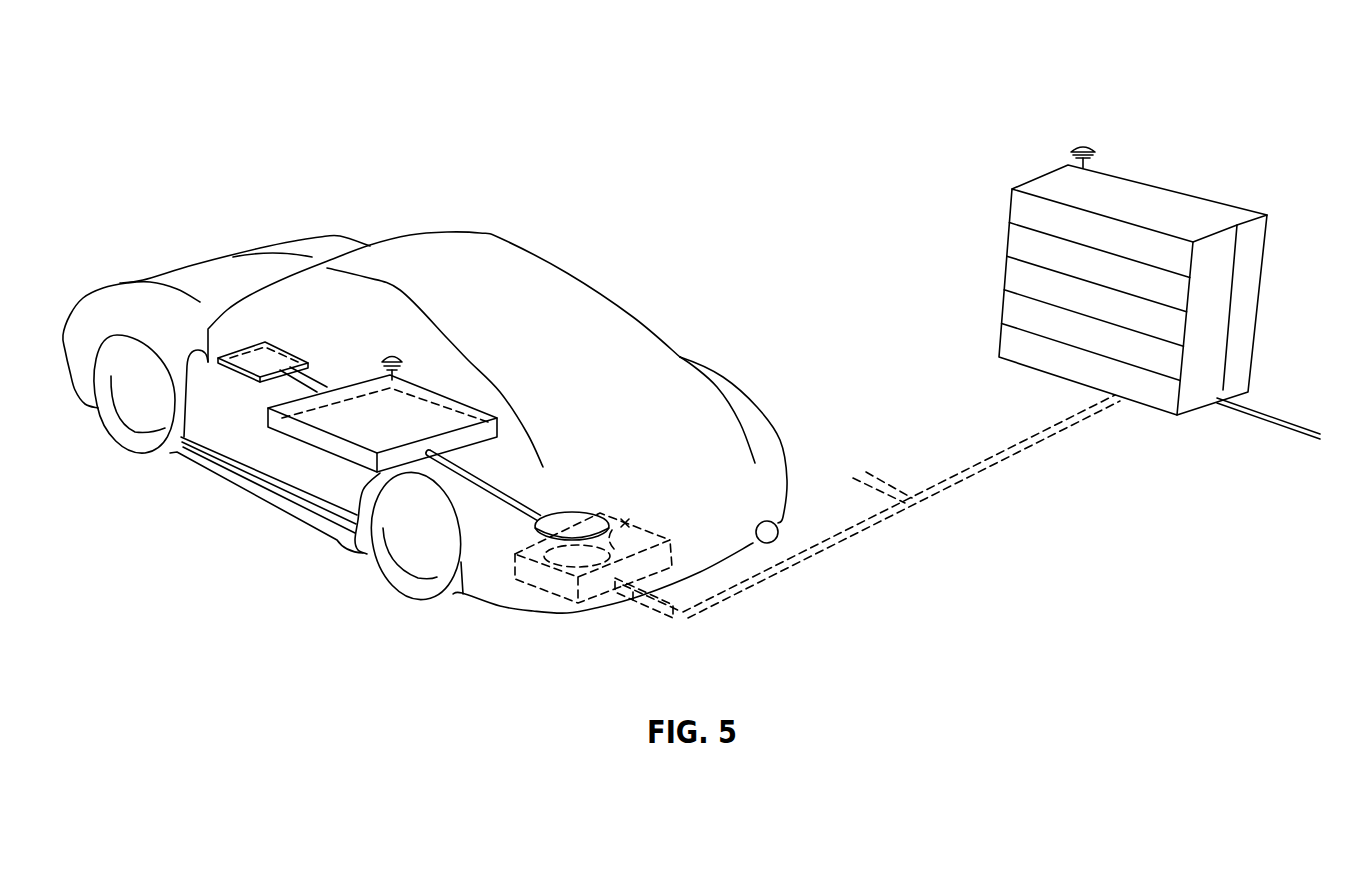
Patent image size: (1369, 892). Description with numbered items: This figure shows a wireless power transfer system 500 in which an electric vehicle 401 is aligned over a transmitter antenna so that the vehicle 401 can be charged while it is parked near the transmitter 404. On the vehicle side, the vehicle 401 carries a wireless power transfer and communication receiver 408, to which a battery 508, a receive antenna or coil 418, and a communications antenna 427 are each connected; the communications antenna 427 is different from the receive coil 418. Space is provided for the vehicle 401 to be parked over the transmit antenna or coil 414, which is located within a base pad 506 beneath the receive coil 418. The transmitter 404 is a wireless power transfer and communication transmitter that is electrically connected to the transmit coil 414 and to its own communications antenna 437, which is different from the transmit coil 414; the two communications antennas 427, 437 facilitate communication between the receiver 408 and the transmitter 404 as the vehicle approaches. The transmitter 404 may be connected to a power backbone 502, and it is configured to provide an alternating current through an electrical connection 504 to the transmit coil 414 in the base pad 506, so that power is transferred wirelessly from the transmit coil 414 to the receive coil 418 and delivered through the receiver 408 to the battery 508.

The electric vehicle 401 is at (195, 267).
The wireless power transfer and communication transmitter 404 is at (1050, 182).
The wireless power transfer and communication receiver 408 is at (277, 406).
The transmit antenna or coil 414 is at (652, 498).
The receive antenna or coil 418 is at (572, 518).
The communications antenna 427 is at (393, 356).
The communications antenna 437 is at (1083, 148).
The wireless power transfer system 500 is at (830, 116).
The power backbone 502 is at (1279, 424).
The electrical connection 504 is at (1000, 466).
The base pad 506 is at (672, 540).
The battery 508 is at (283, 344).